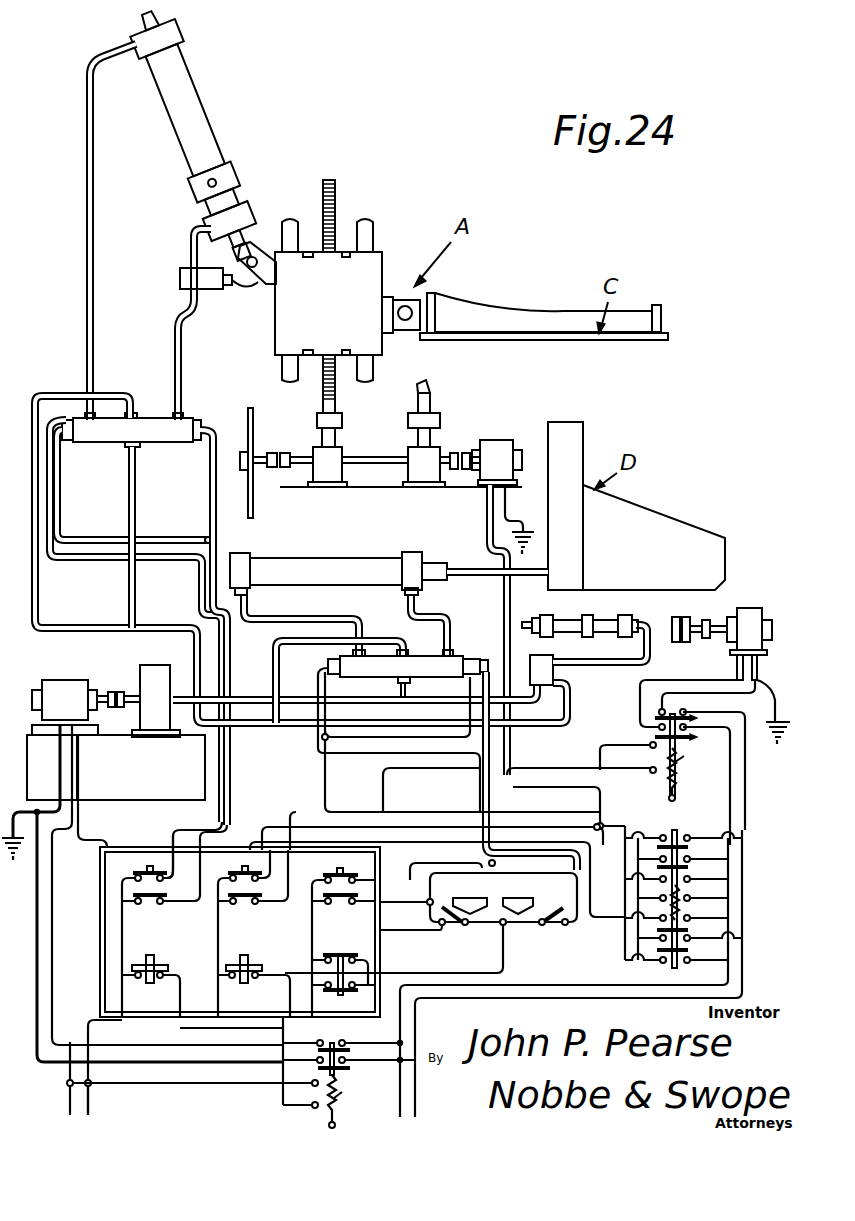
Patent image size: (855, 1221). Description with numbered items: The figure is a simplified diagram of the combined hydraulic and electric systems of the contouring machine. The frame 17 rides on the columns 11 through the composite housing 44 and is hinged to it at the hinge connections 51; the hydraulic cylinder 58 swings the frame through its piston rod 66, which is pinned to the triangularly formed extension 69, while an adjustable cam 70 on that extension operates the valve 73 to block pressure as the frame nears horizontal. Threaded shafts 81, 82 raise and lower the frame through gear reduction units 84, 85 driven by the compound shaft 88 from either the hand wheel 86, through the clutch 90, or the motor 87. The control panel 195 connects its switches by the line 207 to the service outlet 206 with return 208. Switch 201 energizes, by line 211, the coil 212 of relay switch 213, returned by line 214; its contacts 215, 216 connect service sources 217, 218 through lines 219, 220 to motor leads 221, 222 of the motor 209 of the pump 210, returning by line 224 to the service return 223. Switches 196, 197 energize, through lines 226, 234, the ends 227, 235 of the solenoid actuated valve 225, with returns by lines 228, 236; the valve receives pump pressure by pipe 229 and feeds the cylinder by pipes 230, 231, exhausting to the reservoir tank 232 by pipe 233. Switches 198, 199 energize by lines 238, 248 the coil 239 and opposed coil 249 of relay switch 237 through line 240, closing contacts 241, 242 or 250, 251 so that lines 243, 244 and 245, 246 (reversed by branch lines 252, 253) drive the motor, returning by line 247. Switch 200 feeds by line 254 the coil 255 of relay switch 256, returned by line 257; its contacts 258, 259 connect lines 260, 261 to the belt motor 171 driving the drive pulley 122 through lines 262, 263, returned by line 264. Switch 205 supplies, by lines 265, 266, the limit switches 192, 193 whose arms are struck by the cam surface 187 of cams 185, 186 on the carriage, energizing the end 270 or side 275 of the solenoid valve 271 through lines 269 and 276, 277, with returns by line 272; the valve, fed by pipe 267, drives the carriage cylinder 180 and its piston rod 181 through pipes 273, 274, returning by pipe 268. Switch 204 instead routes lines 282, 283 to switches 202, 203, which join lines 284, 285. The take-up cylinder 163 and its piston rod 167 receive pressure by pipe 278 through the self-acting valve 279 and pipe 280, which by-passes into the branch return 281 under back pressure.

The hydraulic cylinder 58 is at (204, 140).
The piston rod 66 is at (246, 249).
The triangularly formed extension 69 is at (262, 284).
The adjustable cam 70 is at (242, 290).
The valve 73 is at (178, 283).
The pipe 230 is at (93, 274).
The pipe 231 is at (180, 354).
The columns 11 is at (290, 236).
The composite housing 44 is at (375, 270).
The threaded shaft 81 is at (337, 212).
The hinge connections 51 is at (406, 322).
The frame 17 is at (533, 315).
The hand wheel 86 is at (255, 421).
The clutch 90 is at (280, 452).
The gear reduction unit 84 is at (331, 463).
The compound shaft 88 is at (380, 455).
The gear reduction unit 85 is at (436, 462).
The threaded shaft 82 is at (432, 387).
The motor 87 is at (495, 449).
The line 245 is at (489, 527).
The line 246 is at (507, 498).
The line 247 is at (507, 516).
The service return 223 is at (400, 706).
The solenoid actuated valve 225 is at (170, 445).
The end of valve 227 is at (68, 440).
The opposite end of valve 235 is at (199, 424).
The line 226 is at (52, 423).
The line 228 is at (58, 510).
The pipe 229 is at (137, 585).
The pipe 233 is at (110, 395).
The line 234 is at (215, 522).
The line 236 is at (211, 494).
The motor 209 is at (67, 683).
The pump 210 is at (148, 672).
The reservoir tank 232 is at (145, 780).
The line 224 is at (28, 812).
The motor lead 221 is at (74, 824).
The motor lead 222 is at (36, 930).
The hydraulic cylinder 180 is at (347, 568).
The piston rod 181 is at (462, 570).
The pipe 273 is at (300, 616).
The pipe 274 is at (450, 618).
The return pipe 268 is at (295, 645).
The pipe 267 is at (400, 690).
The end of valve 270 is at (336, 660).
The solenoid valve 271 is at (424, 656).
The side of valve 275 is at (472, 658).
The line 276 is at (489, 660).
The line 272 is at (328, 689).
The line 269 is at (316, 675).
The line 277 is at (486, 688).
The piston rod 167 is at (527, 620).
The cylinder 163 is at (600, 622).
The motor 171 is at (750, 615).
The drive pulley 122 is at (681, 640).
The pipe 278 is at (582, 663).
The self-acting valve 279 is at (556, 672).
The pipe 280 is at (540, 702).
The branch return 281 is at (570, 705).
The line 262 is at (693, 680).
The line 263 is at (698, 695).
The line 264 is at (772, 692).
The contact 258 is at (692, 718).
The contact 259 is at (692, 737).
The relay switch 256 is at (680, 750).
The coil 255 is at (686, 766).
The line 257 is at (612, 741).
The line 254 is at (607, 775).
The line 260 is at (728, 785).
The line 261 is at (747, 788).
The line 240 is at (247, 825).
The line 238 is at (262, 847).
The line 248 is at (396, 808).
The line 284 is at (422, 870).
The cam 185 is at (476, 900).
The cam 186 is at (518, 904).
The cam surface 187 is at (456, 904).
The limit switch 192 is at (455, 926).
The limit switch 193 is at (553, 926).
The line 265 is at (414, 973).
The branch line 266 is at (510, 926).
The line 285 is at (388, 906).
The line 243 is at (505, 986).
The line 244 is at (745, 965).
The contact 241 is at (680, 846).
The contact 242 is at (690, 862).
The opposed coil 249 is at (684, 878).
The relay switch 237 is at (682, 896).
The coil 239 is at (680, 910).
The contact 250 is at (690, 930).
The contact 251 is at (690, 952).
The branch line 252 is at (660, 940).
The branch line 253 is at (656, 960).
The panel 195 is at (112, 937).
The switch 196 is at (134, 871).
The switch 197 is at (165, 892).
The switch 198 is at (229, 871).
The switch 199 is at (260, 892).
The switch 200 is at (168, 968).
The switch 201 is at (264, 968).
The switch 202 is at (325, 871).
The switch 203 is at (336, 904).
The switch 204 is at (330, 953).
The switch 205 is at (348, 985).
The line 207 is at (122, 950).
The line 211 is at (297, 982).
The line 282 is at (310, 920).
The line 283 is at (312, 900).
The service outlet 206 is at (90, 1108).
The service return 208 is at (70, 1106).
The line 214 is at (208, 1084).
The contact 215 is at (318, 1050).
The contact 216 is at (318, 1068).
The relay switch 213 is at (338, 1082).
The coil 212 is at (340, 1098).
The service source 217 is at (398, 1088).
The service source 218 is at (416, 1090).
The line 219 is at (350, 1043).
The line 220 is at (358, 1062).